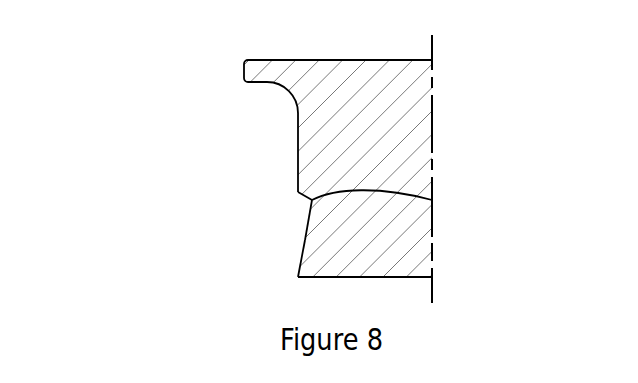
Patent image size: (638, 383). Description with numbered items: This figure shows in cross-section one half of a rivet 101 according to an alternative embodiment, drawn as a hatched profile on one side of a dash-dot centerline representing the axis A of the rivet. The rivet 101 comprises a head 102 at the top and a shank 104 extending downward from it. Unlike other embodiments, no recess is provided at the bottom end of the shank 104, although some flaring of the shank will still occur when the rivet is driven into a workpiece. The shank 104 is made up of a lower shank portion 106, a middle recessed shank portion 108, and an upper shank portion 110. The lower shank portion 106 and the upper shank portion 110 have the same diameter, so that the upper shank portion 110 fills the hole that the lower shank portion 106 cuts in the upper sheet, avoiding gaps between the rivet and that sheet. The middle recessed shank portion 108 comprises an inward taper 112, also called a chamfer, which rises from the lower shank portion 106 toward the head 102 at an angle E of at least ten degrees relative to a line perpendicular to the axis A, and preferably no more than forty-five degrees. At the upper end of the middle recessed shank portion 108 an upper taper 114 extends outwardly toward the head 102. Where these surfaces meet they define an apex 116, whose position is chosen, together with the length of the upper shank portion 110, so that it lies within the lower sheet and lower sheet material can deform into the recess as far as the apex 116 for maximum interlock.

The rivet 101 is at (191, 60).
The head 102 is at (331, 68).
The shank 104 is at (424, 136).
The lower shank portion 106 is at (302, 262).
The middle recessed shank portion 108 is at (238, 207).
The upper shank portion 110 is at (308, 137).
The inward taper 112 is at (315, 228).
The upper taper 114 is at (297, 192).
The apex 116 is at (432, 200).
The axis A is at (432, 38).
The angle E is at (298, 247).